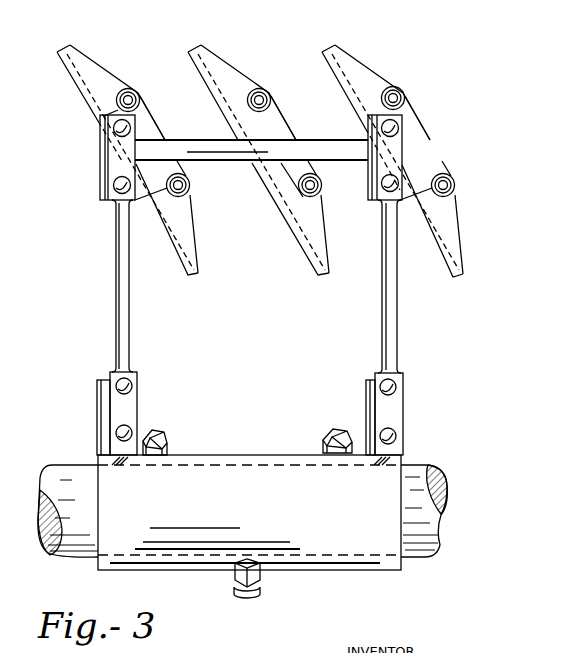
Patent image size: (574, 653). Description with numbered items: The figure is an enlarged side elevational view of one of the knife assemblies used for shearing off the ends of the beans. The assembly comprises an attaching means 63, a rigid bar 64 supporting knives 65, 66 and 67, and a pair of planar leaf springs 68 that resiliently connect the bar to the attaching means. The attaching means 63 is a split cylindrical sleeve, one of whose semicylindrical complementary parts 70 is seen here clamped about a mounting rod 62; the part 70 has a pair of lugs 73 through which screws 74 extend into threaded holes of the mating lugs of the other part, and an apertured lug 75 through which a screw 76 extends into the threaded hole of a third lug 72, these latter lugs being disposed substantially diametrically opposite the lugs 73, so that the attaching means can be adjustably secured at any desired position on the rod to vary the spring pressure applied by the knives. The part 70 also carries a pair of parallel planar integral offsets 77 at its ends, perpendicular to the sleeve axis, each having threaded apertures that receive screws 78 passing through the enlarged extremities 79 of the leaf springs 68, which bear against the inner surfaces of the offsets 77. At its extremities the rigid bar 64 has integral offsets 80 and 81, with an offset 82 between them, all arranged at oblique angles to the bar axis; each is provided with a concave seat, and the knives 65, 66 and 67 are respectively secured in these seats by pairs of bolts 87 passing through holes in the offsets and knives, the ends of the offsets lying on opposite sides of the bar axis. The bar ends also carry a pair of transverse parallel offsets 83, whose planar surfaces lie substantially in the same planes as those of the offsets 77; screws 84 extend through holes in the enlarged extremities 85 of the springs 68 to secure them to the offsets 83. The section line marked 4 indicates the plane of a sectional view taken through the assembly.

The section line 4- 4 is at (87, 300).
The shaft 62 is at (83, 470).
The attaching means 63 is at (255, 454).
The rigid bar 64 is at (212, 142).
The knife 65 is at (85, 62).
The knife 66 is at (208, 58).
The knife 67 is at (348, 55).
The leaf spring 68 is at (115, 253).
The semicylindrical complementary part 70 is at (112, 505).
The third lug 72 is at (261, 596).
The lug 73 is at (165, 442).
The screw 74 is at (153, 430).
The apertured lug 75 is at (262, 582).
The screw 76 is at (234, 564).
The offset 77 is at (102, 377).
The screw 78 is at (132, 390).
The enlarged extremity 79 is at (133, 398).
The offset 80 is at (150, 112).
The offset 81 is at (410, 117).
The offset 82 is at (275, 113).
The offset 83 is at (105, 193).
The screw 84 is at (112, 130).
The enlarged extremity 85 is at (113, 158).
The bolt 87 is at (131, 90).